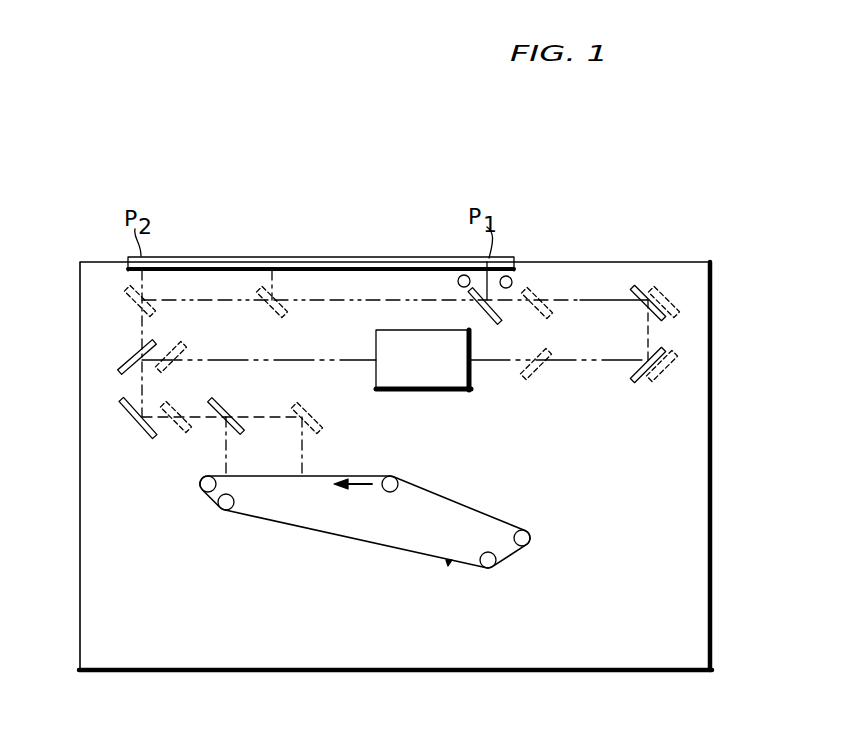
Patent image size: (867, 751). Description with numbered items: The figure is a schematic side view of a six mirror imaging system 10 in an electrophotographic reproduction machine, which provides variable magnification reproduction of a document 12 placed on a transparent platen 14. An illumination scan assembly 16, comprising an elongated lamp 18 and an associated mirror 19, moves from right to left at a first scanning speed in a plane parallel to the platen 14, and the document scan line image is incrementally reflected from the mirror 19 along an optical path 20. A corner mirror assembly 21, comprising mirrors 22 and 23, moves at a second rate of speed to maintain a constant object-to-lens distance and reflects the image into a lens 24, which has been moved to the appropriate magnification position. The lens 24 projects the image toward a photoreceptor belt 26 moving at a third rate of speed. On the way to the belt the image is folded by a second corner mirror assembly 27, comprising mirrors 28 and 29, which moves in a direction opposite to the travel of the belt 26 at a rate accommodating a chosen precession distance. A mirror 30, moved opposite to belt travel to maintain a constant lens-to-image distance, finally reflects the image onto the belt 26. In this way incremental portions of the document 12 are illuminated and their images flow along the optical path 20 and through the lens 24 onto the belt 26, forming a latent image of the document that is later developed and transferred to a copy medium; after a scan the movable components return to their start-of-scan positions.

The six mirror imaging system 10 is at (362, 398).
The document 12 is at (220, 256).
The transparent platen 14 is at (273, 258).
The illumination scan assembly 16 is at (498, 278).
The elongated lamp 18 is at (456, 274).
The mirror 19 is at (480, 315).
The optical path 20 is at (600, 299).
The corner mirror assembly 21 is at (686, 338).
The mirror 22 is at (648, 287).
The mirror 23 is at (634, 382).
The lens 24 is at (420, 378).
The photoreceptor belt 26 is at (314, 535).
The corner mirror assembly 27 is at (118, 383).
The mirror 28 is at (135, 346).
The mirror 29 is at (132, 430).
The mirror 30 is at (235, 407).